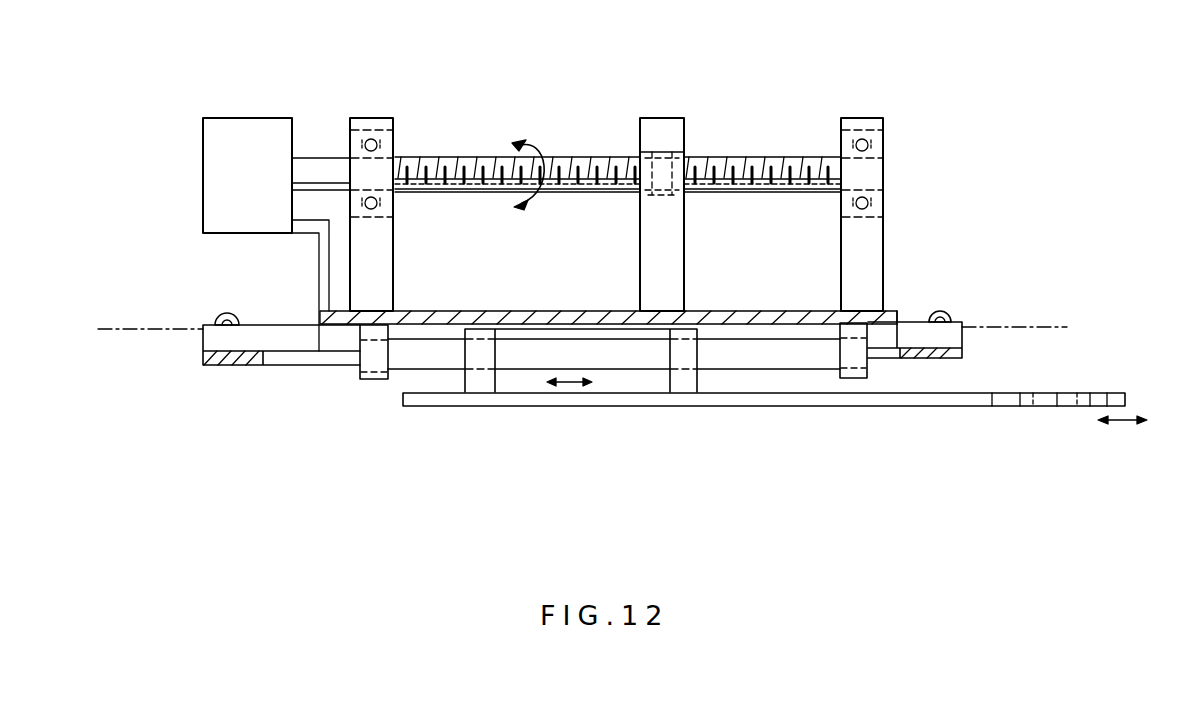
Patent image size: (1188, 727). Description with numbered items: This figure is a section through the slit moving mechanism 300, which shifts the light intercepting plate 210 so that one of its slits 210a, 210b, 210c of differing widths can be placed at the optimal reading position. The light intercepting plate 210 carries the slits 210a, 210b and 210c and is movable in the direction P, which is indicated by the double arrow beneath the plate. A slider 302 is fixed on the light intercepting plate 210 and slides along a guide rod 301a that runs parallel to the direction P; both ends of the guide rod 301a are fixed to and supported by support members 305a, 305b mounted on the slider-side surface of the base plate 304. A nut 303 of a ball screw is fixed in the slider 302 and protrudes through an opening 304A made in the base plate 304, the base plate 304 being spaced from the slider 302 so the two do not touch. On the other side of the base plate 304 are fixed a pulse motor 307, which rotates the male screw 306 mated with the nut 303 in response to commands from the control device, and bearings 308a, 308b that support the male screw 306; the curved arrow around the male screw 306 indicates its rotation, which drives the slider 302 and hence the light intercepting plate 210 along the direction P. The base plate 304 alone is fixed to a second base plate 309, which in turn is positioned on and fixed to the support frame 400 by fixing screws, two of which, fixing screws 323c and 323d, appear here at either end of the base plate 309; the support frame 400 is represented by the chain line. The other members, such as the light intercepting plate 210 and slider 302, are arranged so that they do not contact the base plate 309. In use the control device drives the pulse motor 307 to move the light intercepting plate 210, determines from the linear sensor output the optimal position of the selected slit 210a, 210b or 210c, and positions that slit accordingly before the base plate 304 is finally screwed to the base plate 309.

The slit moving mechanism 300 is at (972, 70).
The pulse motor 307 is at (258, 125).
The bearing 308a is at (378, 118).
The male screw 306 is at (467, 158).
The nut 303 is at (672, 125).
The bearing 308b is at (860, 120).
The opening 304A is at (472, 310).
The base plate 309 is at (278, 330).
The fixing screw 323c is at (218, 315).
The base plate 304 is at (899, 312).
The fixing screw 323d is at (948, 313).
The support frame 400 is at (1067, 327).
The support member 305a is at (367, 383).
The support member 305b is at (868, 378).
The guide rod 301a is at (402, 357).
The slider 302 is at (527, 380).
The light intercepting plate 210 is at (1110, 392).
The slit 210a is at (992, 398).
The slit 210b is at (1033, 398).
The slit 210c is at (1075, 404).
The moving direction P is at (1120, 422).